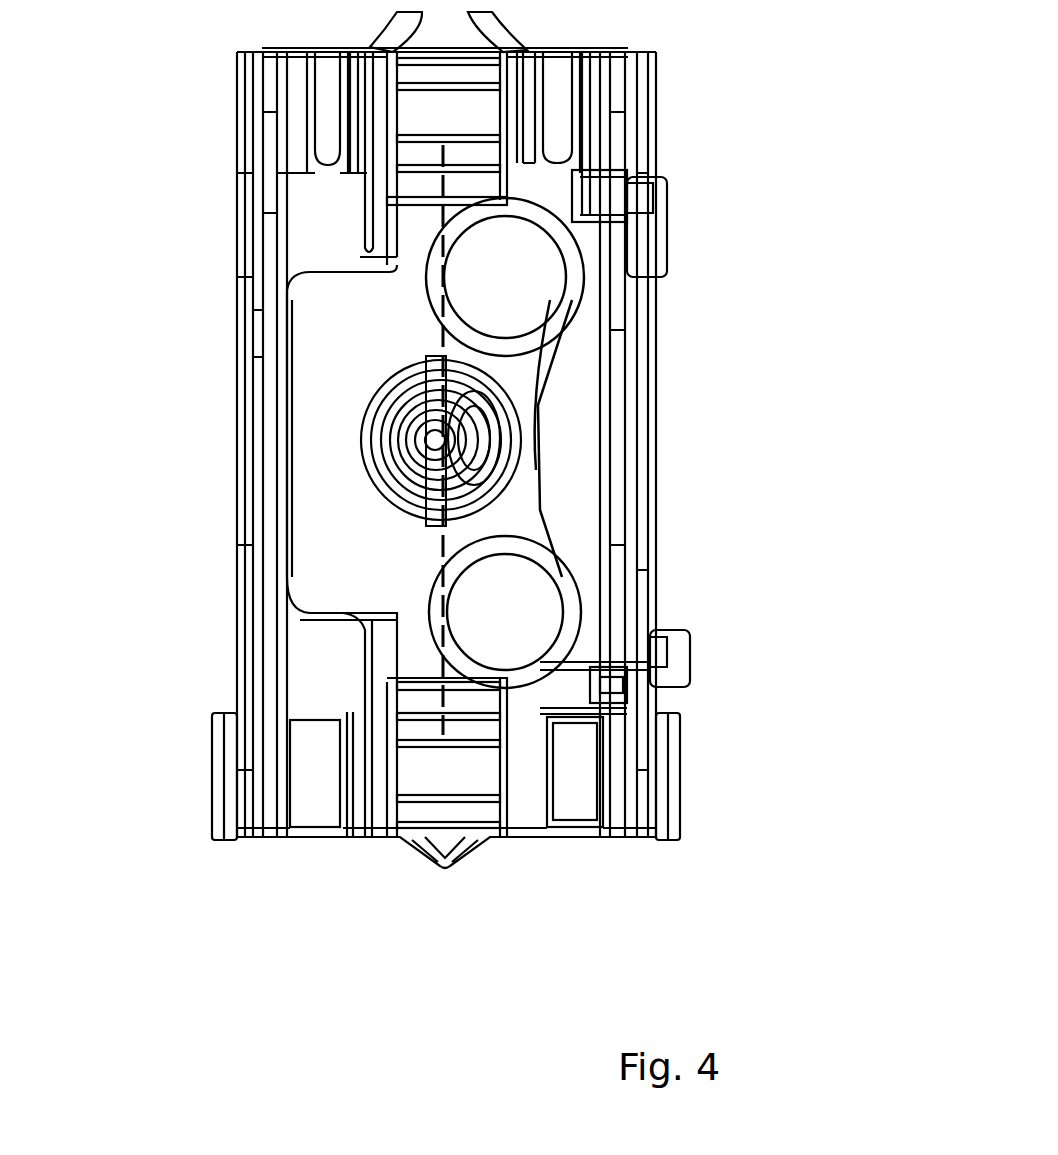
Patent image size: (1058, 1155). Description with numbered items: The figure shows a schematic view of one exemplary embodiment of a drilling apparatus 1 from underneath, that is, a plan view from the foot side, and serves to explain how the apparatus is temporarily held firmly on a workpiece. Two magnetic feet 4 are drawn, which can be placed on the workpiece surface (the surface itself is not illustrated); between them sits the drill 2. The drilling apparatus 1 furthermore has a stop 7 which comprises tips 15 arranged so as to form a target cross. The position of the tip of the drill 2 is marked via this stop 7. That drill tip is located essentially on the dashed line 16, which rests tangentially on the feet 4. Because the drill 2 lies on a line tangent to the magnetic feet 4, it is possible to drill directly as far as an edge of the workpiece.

The drilling apparatus 1 is at (140, 840).
The drill 2 is at (443, 440).
The magnetic feet 4 is at (505, 271).
The stop 7 is at (508, 440).
The tips 15 is at (443, 482).
The dashed line 16 is at (443, 682).